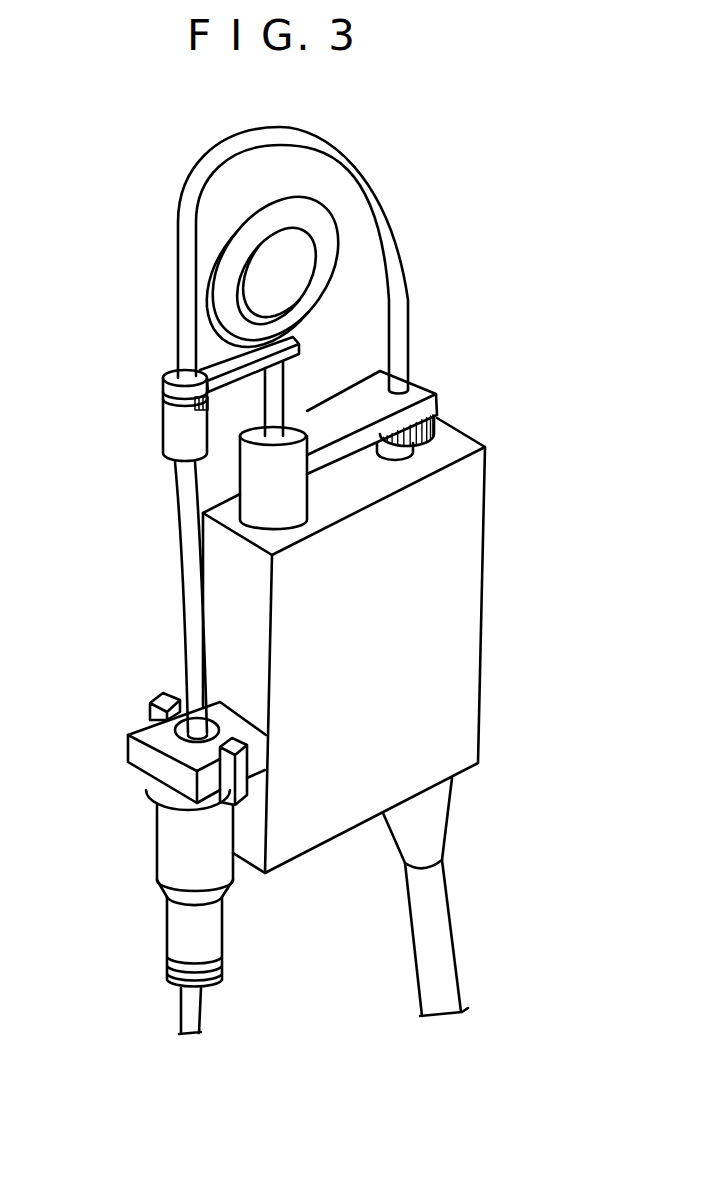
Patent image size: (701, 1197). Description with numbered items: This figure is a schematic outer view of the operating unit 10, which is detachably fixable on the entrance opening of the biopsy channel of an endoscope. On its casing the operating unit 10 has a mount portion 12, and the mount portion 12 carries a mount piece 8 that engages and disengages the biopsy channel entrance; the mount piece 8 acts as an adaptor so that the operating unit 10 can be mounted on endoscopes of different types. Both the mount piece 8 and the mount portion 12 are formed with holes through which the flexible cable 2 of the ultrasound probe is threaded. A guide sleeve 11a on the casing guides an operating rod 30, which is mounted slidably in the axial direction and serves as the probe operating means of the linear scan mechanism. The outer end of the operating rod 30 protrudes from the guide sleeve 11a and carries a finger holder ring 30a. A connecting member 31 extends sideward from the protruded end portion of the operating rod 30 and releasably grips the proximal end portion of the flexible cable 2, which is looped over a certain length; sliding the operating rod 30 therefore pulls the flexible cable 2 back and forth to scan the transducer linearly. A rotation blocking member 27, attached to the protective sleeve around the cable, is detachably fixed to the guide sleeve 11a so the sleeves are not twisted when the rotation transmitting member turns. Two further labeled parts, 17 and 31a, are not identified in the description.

The flexible cable 2 is at (190, 533).
The mount piece 8 is at (170, 845).
The operating unit 10 is at (492, 595).
The guide sleeve 11a is at (250, 473).
The mount portion 12 is at (135, 740).
The cable 17 is at (437, 927).
The rotation blocking member 27 is at (413, 392).
The operating rod 30 is at (282, 390).
The finger holder ring 30a is at (316, 220).
The connecting member 31 is at (213, 362).
The tube clamp 31a is at (163, 418).